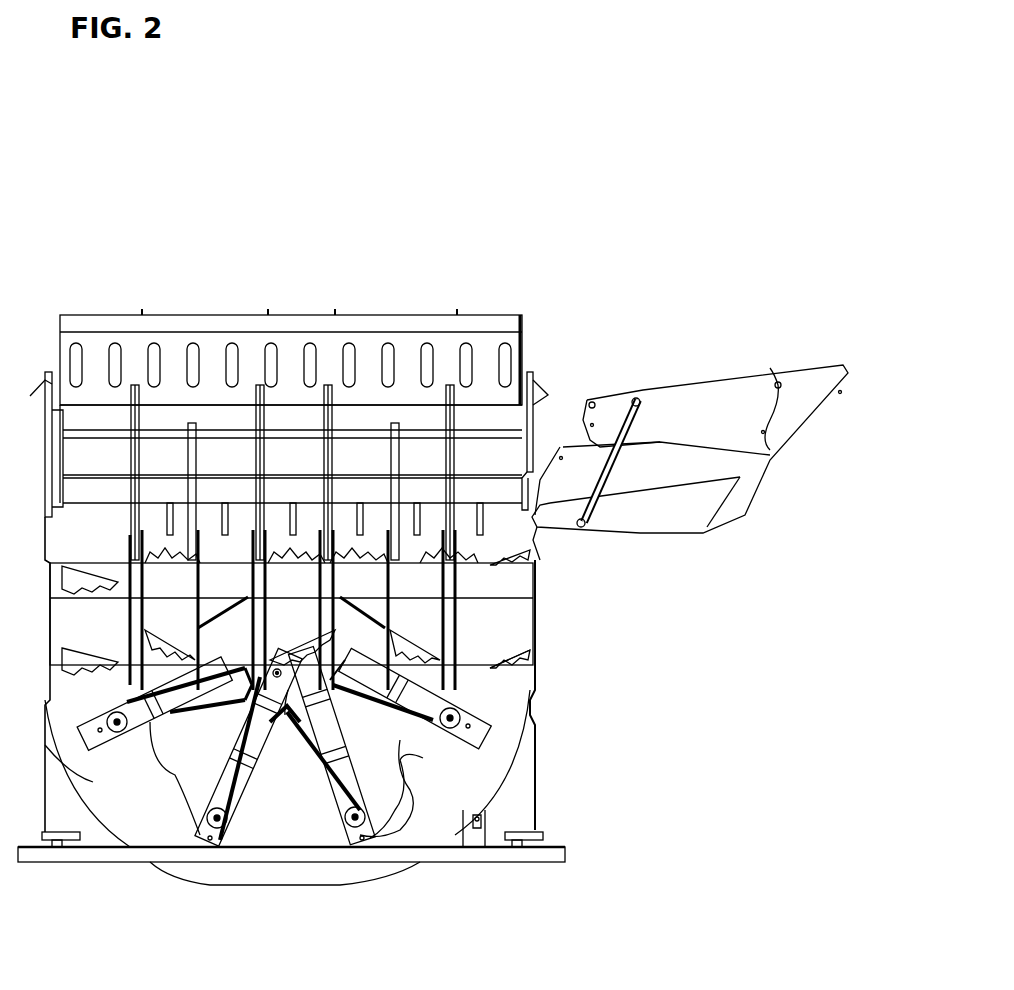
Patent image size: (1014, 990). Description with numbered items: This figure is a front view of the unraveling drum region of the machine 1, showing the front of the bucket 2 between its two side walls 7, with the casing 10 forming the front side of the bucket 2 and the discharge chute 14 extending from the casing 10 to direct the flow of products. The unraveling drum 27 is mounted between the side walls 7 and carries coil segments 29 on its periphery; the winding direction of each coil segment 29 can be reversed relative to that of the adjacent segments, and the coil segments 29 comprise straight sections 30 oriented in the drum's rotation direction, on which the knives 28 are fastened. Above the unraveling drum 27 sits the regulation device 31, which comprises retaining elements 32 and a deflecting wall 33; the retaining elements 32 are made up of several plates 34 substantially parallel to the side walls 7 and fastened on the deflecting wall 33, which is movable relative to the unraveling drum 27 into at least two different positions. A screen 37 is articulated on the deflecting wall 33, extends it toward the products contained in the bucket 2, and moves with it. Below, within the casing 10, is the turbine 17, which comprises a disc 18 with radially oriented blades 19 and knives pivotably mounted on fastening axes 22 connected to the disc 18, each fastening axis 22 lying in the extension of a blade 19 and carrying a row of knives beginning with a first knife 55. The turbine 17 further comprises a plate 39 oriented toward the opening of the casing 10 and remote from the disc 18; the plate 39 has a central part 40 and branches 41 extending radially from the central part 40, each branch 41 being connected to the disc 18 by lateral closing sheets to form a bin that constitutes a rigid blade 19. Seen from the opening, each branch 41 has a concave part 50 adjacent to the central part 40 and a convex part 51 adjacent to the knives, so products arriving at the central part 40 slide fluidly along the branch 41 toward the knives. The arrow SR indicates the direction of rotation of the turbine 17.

The machine 1 is at (640, 150).
The bucket 2 is at (339, 682).
The side walls 7 is at (537, 734).
The casing 10 is at (510, 788).
The discharge chute 14 is at (755, 468).
The turbine 17 is at (289, 843).
The disc 18 is at (423, 758).
The blades 19 is at (155, 738).
The fastening axis 22 is at (345, 815).
The unraveling drum 27 is at (532, 672).
The knives 28 is at (338, 611).
The coil segments 29 is at (90, 565).
The straight sections 30 is at (145, 620).
The regulation device 31 is at (347, 334).
The retaining elements 32 is at (490, 512).
The deflecting wall 33 is at (490, 420).
The plates 34 is at (455, 497).
The screen 37 is at (483, 325).
The plate 39 is at (214, 707).
The central part 40 is at (292, 705).
The branch 41 is at (242, 760).
The concave part 50 is at (365, 693).
The convex part 51 is at (430, 710).
The first knife 55 is at (370, 840).
The direction of rotation SR is at (508, 727).